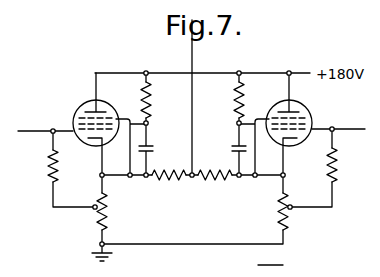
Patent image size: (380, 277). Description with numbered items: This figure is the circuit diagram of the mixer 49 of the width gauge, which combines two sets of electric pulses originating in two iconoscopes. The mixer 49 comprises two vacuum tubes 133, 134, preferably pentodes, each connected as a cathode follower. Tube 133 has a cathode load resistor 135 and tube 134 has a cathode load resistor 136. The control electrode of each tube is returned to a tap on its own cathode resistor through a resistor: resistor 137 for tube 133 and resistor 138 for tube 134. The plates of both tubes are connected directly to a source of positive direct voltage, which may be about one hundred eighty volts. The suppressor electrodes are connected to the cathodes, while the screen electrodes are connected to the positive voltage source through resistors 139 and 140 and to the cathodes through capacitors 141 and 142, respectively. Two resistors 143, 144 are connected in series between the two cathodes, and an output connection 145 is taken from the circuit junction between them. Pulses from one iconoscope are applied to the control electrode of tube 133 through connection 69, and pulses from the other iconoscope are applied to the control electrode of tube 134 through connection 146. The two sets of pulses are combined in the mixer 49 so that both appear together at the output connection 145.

The mixer 49 is at (270, 257).
The connection 69 is at (45, 129).
The vacuum tube 133 is at (86, 106).
The vacuum tube 134 is at (304, 106).
The cathode load resistor 135 is at (108, 209).
The cathode load resistor 136 is at (278, 212).
The resistor 137 is at (49, 175).
The resistor 138 is at (338, 171).
The resistor 139 is at (163, 98).
The resistor 140 is at (236, 105).
The capacitor 141 is at (154, 149).
The capacitor 142 is at (230, 149).
The resistor 143 is at (169, 186).
The resistor 144 is at (215, 186).
The output connection 145 is at (192, 60).
The connection 146 is at (348, 130).